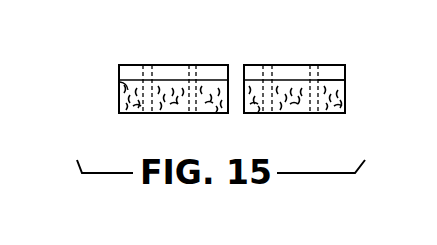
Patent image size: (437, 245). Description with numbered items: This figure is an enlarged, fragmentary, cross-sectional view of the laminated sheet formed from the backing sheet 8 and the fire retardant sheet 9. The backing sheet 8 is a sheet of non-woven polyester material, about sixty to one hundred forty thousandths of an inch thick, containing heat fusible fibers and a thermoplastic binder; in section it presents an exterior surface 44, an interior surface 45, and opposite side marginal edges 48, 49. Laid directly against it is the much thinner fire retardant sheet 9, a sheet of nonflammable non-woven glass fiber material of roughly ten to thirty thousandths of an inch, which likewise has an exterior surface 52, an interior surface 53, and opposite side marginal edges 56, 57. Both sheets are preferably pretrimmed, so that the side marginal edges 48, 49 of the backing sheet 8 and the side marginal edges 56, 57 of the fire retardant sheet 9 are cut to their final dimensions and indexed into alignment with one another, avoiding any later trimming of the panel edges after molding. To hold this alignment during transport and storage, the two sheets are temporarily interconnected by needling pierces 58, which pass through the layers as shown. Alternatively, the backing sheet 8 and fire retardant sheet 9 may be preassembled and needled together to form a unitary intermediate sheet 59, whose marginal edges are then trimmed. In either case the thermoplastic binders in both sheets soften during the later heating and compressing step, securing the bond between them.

The backing sheet 8 is at (352, 120).
The fire retardant sheet 9 is at (115, 60).
The exterior surface 44 is at (325, 82).
The interior surface 45 is at (281, 113).
The side marginal edge 48 is at (118, 98).
The side marginal edge 49 is at (345, 98).
The exterior surface 52 is at (175, 68).
The interior surface 53 is at (120, 90).
The side marginal edge 56 is at (118, 70).
The side marginal edge 57 is at (345, 75).
The needling pierces 58 is at (135, 113).
The intermediate sheet 59 is at (287, 58).